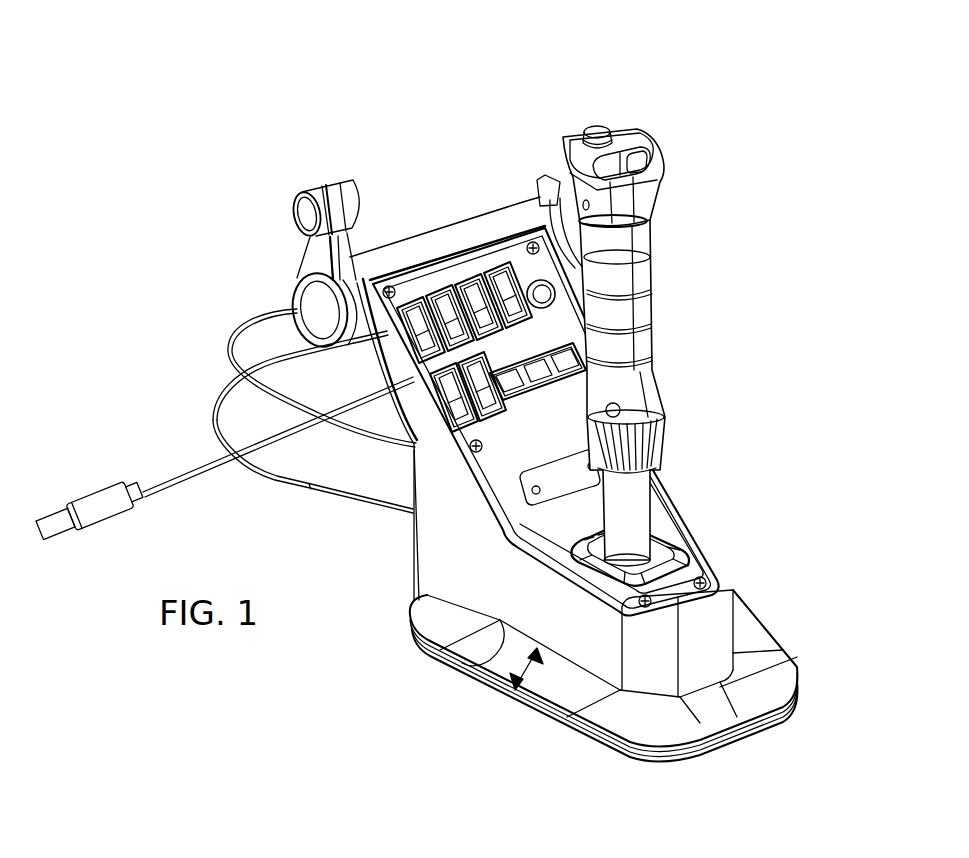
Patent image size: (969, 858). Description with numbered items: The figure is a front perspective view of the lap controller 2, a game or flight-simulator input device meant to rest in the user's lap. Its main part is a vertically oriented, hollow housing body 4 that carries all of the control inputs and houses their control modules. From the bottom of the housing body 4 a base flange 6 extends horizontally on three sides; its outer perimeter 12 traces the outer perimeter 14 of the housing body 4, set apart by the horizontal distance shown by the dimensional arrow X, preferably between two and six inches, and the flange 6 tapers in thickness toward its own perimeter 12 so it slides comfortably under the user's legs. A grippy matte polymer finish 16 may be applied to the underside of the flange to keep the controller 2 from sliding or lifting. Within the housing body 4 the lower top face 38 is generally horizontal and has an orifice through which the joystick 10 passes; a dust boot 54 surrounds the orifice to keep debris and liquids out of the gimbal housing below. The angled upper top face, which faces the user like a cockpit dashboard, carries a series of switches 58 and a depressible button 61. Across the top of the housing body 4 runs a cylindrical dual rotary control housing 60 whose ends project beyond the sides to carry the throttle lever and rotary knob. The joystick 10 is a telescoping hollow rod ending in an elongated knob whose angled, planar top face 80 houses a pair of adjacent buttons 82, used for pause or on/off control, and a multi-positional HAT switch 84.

The lap controller 2 is at (228, 752).
The housing body 4 is at (437, 568).
The base flange 6 is at (682, 740).
The joystick 10 is at (653, 325).
The outer perimeter 12 is at (765, 617).
The outer perimeter 14 is at (470, 673).
The grippy matte polymer finish 16 is at (787, 707).
The lower top face 38 is at (690, 573).
The dust boot 54 is at (672, 513).
The switches 58 is at (510, 280).
The dual rotary control housing 60 is at (407, 245).
The depressible button 61 is at (545, 290).
The angled planar top face 80 is at (627, 140).
The adjacent buttons 82 is at (640, 158).
The multi-positional HAT switch 84 is at (597, 128).
The dimensional arrow X is at (533, 668).